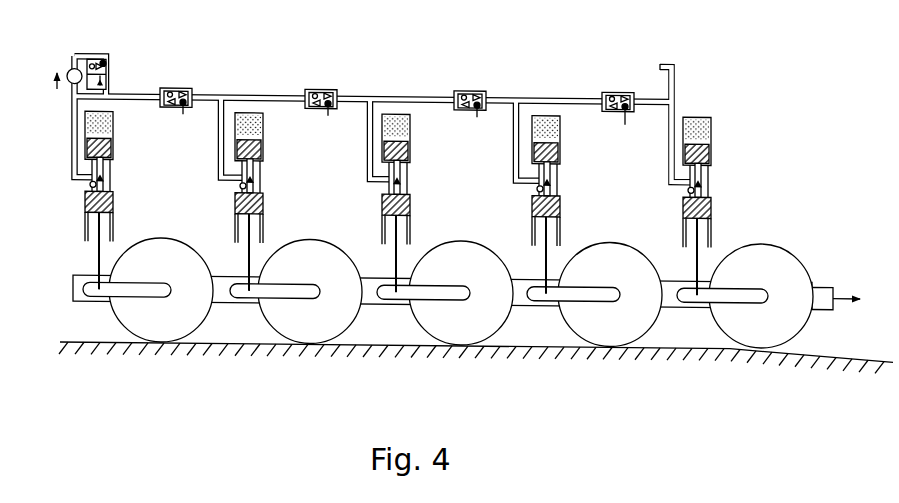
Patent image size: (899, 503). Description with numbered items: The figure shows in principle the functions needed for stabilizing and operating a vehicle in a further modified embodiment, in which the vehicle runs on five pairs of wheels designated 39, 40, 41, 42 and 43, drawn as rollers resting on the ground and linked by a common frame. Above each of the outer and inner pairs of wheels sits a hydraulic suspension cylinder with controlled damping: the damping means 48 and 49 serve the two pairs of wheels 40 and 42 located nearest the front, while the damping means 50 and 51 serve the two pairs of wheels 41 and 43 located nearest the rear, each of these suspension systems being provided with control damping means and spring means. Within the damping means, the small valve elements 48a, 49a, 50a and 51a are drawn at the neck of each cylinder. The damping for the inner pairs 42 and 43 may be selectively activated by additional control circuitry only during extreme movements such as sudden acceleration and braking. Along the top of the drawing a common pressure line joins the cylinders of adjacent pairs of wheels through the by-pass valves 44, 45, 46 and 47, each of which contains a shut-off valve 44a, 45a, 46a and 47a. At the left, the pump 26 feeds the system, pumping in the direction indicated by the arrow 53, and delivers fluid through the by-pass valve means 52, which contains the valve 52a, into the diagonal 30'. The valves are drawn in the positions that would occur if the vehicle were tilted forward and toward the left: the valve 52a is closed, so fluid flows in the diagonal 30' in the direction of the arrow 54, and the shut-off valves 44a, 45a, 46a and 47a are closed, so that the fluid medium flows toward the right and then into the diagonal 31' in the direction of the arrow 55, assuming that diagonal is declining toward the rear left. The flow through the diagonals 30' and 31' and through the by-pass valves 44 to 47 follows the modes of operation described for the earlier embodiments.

The pump 26 is at (67, 69).
The diagonal 30' is at (94, 57).
The arrow 54 is at (107, 61).
The valve 52a is at (110, 70).
The by-pass valve means 52 is at (114, 77).
The by-pass valve 47 is at (192, 81).
The shut-off valve 47a is at (172, 121).
The by-pass valve 46 is at (321, 72).
The shut-off valve 46a is at (315, 122).
The by-pass valve 45 is at (475, 71).
The shut-off valve 45a is at (472, 123).
The by-pass valve 44 is at (612, 82).
The shut-off valve 44a is at (620, 125).
The arrow 53 is at (62, 97).
The damping means 48 is at (113, 176).
The valve ball 48a is at (85, 184).
The damping means 49 is at (265, 177).
The valve ball 49a is at (239, 186).
The damping means 50 is at (563, 176).
The valve ball 50a is at (536, 187).
The damping means 51 is at (713, 176).
The valve ball 51a is at (687, 186).
The pair of wheels 41 is at (141, 250).
The pair of wheels 43 is at (298, 244).
The pair of wheels 39 is at (450, 249).
The pair of wheels 42 is at (600, 246).
The pair of wheels 40 is at (752, 254).
The arrow 55 is at (659, 59).
The diagonal 31' is at (682, 103).